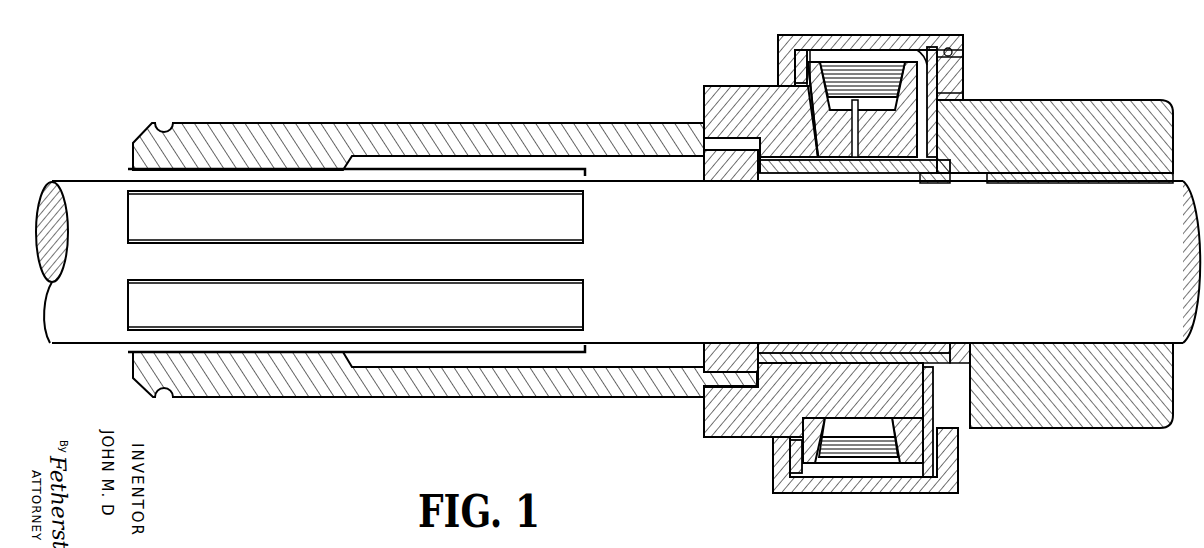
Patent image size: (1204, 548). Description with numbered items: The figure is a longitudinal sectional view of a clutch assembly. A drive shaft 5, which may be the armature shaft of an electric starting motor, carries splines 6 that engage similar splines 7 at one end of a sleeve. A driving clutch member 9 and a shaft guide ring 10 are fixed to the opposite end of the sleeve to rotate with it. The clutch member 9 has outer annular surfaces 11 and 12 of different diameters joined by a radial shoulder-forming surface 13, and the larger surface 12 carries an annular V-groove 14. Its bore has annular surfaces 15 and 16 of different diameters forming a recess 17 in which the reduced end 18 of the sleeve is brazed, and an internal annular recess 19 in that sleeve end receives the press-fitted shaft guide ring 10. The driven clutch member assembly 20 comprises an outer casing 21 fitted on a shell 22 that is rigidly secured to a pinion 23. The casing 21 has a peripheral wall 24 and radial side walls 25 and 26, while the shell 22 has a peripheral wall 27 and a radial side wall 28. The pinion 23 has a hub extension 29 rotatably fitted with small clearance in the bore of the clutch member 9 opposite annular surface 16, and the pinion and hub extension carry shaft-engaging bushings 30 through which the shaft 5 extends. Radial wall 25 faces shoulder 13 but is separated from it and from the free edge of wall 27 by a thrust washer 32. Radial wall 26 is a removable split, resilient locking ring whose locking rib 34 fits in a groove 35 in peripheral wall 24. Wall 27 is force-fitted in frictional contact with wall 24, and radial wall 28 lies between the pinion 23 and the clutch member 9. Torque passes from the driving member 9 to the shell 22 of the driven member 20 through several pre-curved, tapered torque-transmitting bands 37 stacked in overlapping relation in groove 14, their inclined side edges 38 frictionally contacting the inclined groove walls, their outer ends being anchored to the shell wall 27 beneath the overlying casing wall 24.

The drive shaft 5 is at (604, 352).
The splines 6 is at (348, 178).
The splines 7 is at (575, 209).
The driving clutch member 9 is at (699, 80).
The shaft guide ring 10 is at (704, 168).
The outer annular surface 11 is at (723, 78).
The outer annular surface 12 is at (924, 158).
The radial shoulder-forming surface 13 is at (807, 175).
The annular V-groove 14 is at (857, 420).
The annular surface 15 is at (741, 145).
The annular surface 16 is at (875, 160).
The recess 17 is at (770, 185).
The reduced end 18 is at (732, 183).
The internal annular recess 19 is at (703, 153).
The driven clutch member assembly 20 is at (770, 37).
The outer casing 21 is at (778, 35).
The shell 22 is at (925, 43).
The pinion 23 is at (1114, 92).
The peripheral wall 24 is at (866, 36).
The radial side wall 25 is at (778, 51).
The radial side wall 26 is at (963, 63).
The peripheral wall 27 is at (840, 36).
The radial side wall 28 is at (963, 95).
The hub extension 29 is at (888, 350).
The shaft-engaging bushings 30 is at (1058, 184).
The thrust washer 32 is at (807, 72).
The locking rib 34 is at (963, 43).
The groove 35 is at (956, 42).
The torque-transmitting bands 37 is at (853, 160).
The inclined side edges 38 is at (822, 175).